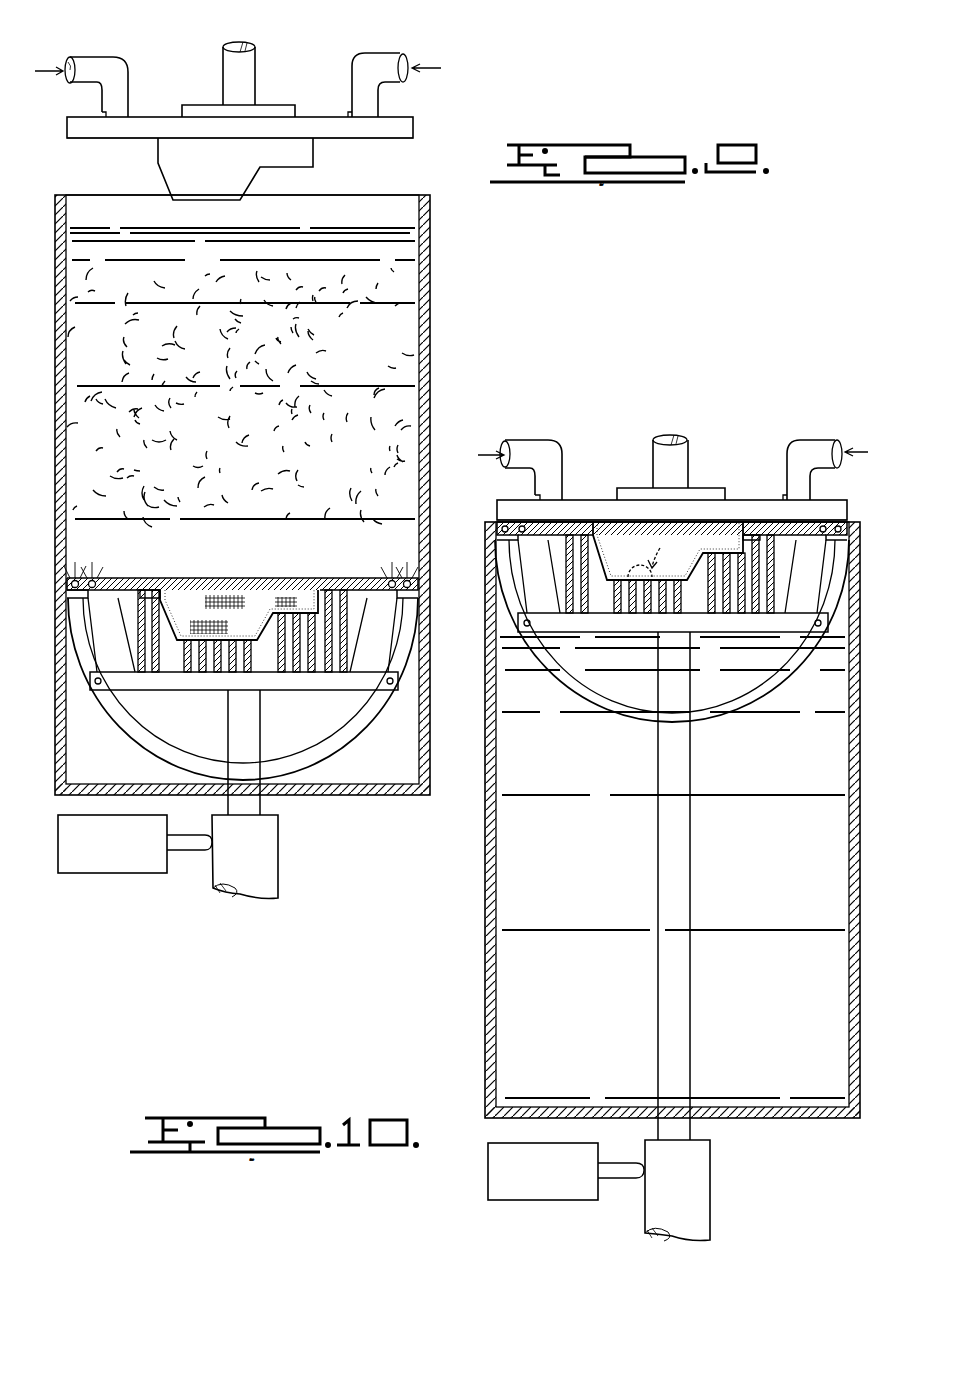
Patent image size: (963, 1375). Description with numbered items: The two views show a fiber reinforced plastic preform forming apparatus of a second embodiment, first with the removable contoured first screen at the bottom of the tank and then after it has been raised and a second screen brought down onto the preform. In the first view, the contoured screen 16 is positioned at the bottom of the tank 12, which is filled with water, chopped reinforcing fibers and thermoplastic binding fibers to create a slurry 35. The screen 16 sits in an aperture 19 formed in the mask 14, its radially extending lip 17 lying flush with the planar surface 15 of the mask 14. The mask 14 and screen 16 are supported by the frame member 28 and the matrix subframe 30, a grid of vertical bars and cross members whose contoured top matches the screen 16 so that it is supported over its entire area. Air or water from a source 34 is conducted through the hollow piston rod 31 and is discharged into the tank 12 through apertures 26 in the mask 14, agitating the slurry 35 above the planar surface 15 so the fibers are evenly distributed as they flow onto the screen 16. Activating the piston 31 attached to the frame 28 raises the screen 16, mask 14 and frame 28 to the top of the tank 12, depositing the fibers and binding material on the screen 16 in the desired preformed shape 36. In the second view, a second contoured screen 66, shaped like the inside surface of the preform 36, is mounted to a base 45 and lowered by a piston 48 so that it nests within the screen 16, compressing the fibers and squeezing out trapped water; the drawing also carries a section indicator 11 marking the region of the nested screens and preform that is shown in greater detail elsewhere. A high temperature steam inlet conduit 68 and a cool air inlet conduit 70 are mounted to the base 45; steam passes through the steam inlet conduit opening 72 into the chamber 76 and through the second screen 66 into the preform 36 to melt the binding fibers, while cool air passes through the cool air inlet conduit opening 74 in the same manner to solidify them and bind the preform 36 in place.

In FIG. 10, the preform / molded article 11 is at (648, 551).
In FIG. 9, the tank 12 is at (428, 330).
In FIG. 10, the tank 12 is at (488, 1023).
In FIG. 9, the mask 14 is at (100, 590).
In FIG. 9, the planar surface 15 is at (348, 577).
In FIG. 10, the planar surface 15 is at (672, 531).
In FIG. 9, the contoured screen 16 is at (174, 640).
In FIG. 10, the contoured screen 16 is at (690, 582).
In FIG. 9, the radially extending lip 17 is at (327, 577).
In FIG. 10, the radially extending lip 17 is at (753, 523).
In FIG. 9, the aperture 19 is at (140, 580).
In FIG. 9, the apertures 26 is at (410, 583).
In FIG. 9, the frame member 28 is at (132, 727).
In FIG. 10, the frame member 28 is at (752, 697).
In FIG. 9, the matrix subframe 30 is at (388, 645).
In FIG. 10, the matrix subframe 30 is at (808, 603).
In FIG. 9, the hollow piston rod 31 is at (250, 803).
In FIG. 10, the hollow piston rod 31 is at (670, 1062).
In FIG. 9, the source 34 is at (98, 870).
In FIG. 10, the source 34 is at (535, 1202).
In FIG. 9, the slurry 35 is at (412, 283).
In FIG. 10, the preform 36 is at (743, 557).
In FIG. 9, the base 45 is at (405, 125).
In FIG. 10, the base 45 is at (830, 500).
In FIG. 9, the piston 48 is at (253, 67).
In FIG. 10, the piston 48 is at (683, 452).
In FIG. 9, the second contoured screen 66 is at (302, 157).
In FIG. 10, the second contoured screen 66 is at (613, 533).
In FIG. 9, the high temperature steam inlet conduit 68 is at (122, 68).
In FIG. 10, the high temperature steam inlet conduit 68 is at (562, 452).
In FIG. 9, the cool air inlet conduit 70 is at (360, 62).
In FIG. 10, the cool air inlet conduit 70 is at (792, 448).
In FIG. 9, the high temperature steam inlet conduit opening 72 is at (103, 113).
In FIG. 10, the high temperature steam inlet conduit opening 72 is at (538, 493).
In FIG. 9, the cool air inlet conduit opening 74 is at (355, 110).
In FIG. 10, the cool air inlet conduit opening 74 is at (806, 497).
In FIG. 9, the chamber 76 is at (107, 132).
In FIG. 10, the chamber 76 is at (832, 513).